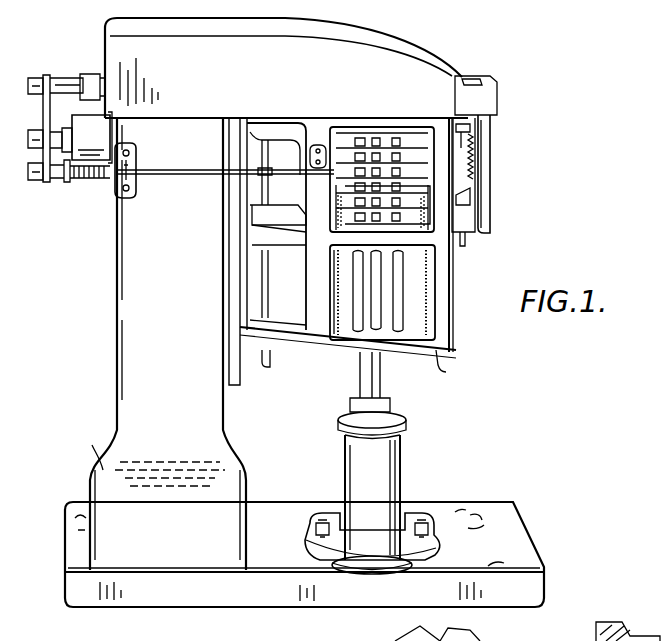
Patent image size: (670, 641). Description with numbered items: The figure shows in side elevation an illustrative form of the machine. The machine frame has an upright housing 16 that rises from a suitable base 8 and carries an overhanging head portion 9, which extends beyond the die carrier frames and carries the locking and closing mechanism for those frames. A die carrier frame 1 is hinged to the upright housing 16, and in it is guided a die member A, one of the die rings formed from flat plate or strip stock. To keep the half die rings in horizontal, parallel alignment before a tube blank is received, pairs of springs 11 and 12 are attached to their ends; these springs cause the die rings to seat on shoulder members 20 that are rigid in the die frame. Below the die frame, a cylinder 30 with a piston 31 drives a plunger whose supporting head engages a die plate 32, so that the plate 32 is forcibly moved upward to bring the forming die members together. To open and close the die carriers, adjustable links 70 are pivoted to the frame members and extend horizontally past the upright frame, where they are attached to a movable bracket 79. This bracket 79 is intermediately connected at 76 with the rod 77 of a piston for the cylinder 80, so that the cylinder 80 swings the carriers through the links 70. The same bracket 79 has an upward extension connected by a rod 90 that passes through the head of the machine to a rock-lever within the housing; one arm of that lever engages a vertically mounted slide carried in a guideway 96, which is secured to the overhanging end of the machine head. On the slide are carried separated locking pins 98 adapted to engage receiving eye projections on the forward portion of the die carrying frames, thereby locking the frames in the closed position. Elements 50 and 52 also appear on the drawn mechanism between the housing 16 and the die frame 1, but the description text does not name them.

The die carrier frame 1 is at (444, 367).
The base 8 is at (496, 548).
The overhanging head portion 9 is at (398, 60).
The springs 11 is at (336, 293).
The springs 12 is at (432, 283).
The upright housing 16 is at (168, 344).
The shoulder members 20 is at (432, 194).
The cylinder 30 is at (372, 493).
The piston 31 is at (383, 381).
The die plate 32 is at (440, 240).
The operating rod 50 is at (264, 300).
The bracket 52 is at (232, 284).
The adjustable links 70 is at (163, 177).
The intermediate connection 76 is at (30, 143).
The piston rod 77 is at (60, 138).
The movable bracket 79 is at (43, 112).
The cylinder 80 is at (92, 137).
The rod 90 is at (70, 84).
The guideway 96 is at (486, 140).
The locking pins 98 is at (468, 240).
The die member A is at (418, 165).